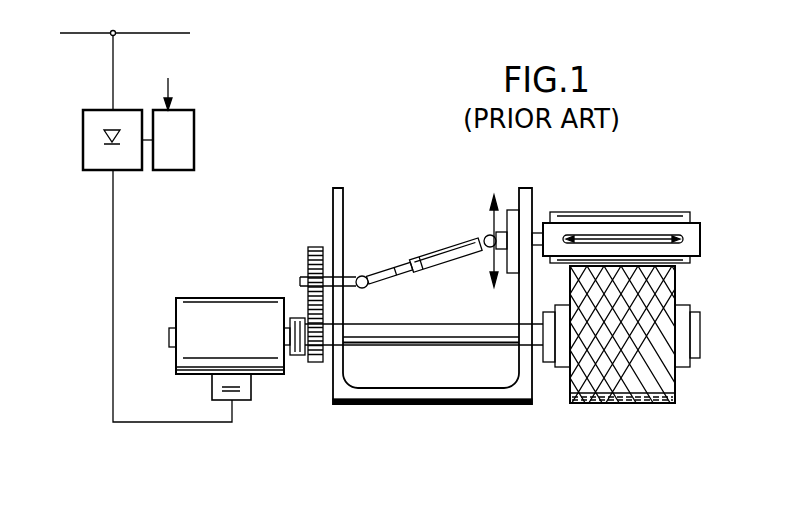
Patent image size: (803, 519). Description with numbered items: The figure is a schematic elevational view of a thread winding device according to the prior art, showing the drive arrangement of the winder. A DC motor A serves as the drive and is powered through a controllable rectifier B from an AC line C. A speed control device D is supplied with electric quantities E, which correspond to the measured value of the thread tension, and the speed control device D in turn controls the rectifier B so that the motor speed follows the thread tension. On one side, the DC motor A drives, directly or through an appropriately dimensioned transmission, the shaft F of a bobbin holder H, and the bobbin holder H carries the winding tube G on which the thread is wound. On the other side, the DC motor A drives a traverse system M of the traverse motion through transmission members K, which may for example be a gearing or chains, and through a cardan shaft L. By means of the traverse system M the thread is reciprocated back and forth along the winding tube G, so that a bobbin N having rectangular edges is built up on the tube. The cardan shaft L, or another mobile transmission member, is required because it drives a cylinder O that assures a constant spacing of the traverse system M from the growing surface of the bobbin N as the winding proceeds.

The DC motor A is at (259, 374).
The controllable rectifier B is at (83, 142).
The AC line C is at (177, 33).
The speed control device D is at (194, 141).
The electric quantities E is at (164, 80).
The shaft F is at (429, 346).
The winding tube G is at (684, 367).
The bobbin holder H is at (701, 337).
The transmission members K is at (314, 247).
The cardan shaft L is at (443, 248).
The traverse system M is at (618, 236).
The bobbin N is at (623, 404).
The cylinder O is at (670, 212).